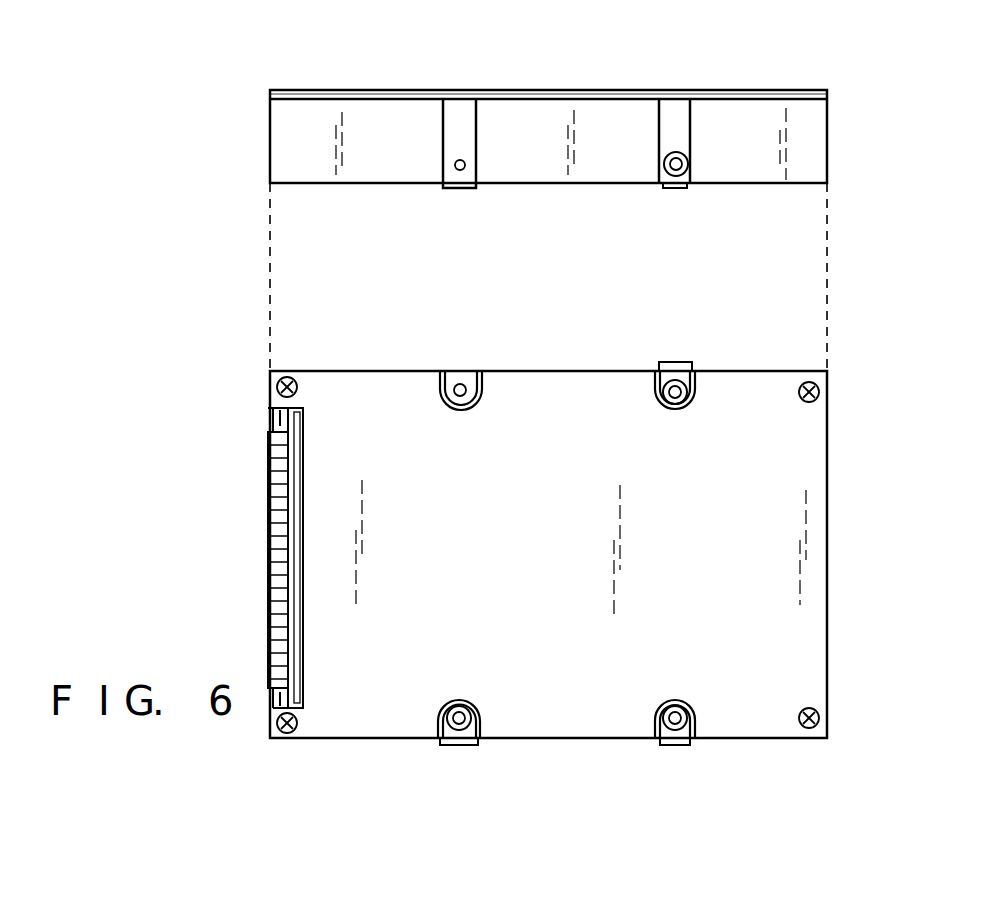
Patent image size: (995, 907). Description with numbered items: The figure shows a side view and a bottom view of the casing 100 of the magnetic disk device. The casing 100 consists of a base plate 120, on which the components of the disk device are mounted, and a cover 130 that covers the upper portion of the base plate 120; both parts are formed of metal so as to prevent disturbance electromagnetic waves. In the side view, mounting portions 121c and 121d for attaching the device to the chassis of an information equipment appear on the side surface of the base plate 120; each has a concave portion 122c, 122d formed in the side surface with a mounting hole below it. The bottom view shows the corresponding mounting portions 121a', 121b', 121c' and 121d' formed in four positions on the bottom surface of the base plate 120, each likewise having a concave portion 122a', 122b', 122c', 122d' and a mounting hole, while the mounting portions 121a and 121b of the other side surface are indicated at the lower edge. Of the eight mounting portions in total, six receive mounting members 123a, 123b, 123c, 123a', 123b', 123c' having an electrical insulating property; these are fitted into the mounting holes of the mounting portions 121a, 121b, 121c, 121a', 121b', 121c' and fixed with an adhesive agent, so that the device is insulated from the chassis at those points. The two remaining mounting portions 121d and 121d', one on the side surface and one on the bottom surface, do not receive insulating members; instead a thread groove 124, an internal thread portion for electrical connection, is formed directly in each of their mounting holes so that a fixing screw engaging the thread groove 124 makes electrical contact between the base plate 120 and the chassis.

The casing 100 is at (561, 84).
The base plate 120 is at (827, 150).
The cover 130 is at (791, 90).
The mounting portion 121a is at (630, 773).
The mounting portion 121a' is at (697, 651).
The mounting portion 121b is at (406, 773).
The mounting portion 121b' is at (465, 651).
The mounting portion 121c is at (635, 269).
The mounting portion 121c' is at (677, 459).
The mounting portion 121d is at (450, 277).
The mounting portion 121d' is at (445, 462).
The concave portion 122a' is at (642, 695).
The concave portion 122b' is at (418, 695).
The concave portion 122c is at (681, 114).
The concave portion 122c' is at (636, 407).
The concave portion 122d is at (449, 117).
The concave portion 122d' is at (428, 407).
The mounting member 123a is at (709, 765).
The mounting member 123a' is at (715, 691).
The mounting member 123b is at (483, 765).
The mounting member 123b' is at (491, 691).
The mounting member 123c is at (712, 278).
The mounting member 123c' is at (713, 317).
The thread groove 124 is at (460, 171).